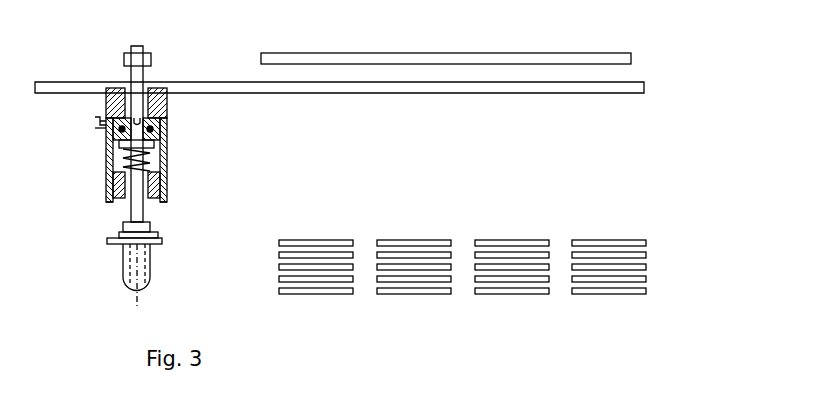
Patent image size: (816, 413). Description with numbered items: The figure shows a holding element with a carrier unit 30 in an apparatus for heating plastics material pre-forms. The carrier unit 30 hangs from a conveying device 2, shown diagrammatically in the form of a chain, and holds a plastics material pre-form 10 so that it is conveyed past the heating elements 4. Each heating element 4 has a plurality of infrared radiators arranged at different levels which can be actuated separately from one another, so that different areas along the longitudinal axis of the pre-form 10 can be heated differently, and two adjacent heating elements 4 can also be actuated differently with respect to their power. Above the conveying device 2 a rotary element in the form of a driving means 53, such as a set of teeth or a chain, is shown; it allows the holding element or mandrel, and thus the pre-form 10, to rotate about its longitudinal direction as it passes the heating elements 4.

The conveying device 2 is at (257, 93).
The driving means 53 is at (403, 57).
The heating element 4 is at (412, 240).
The carrier unit 30 is at (183, 183).
The plastics material pre-form 10 is at (168, 260).